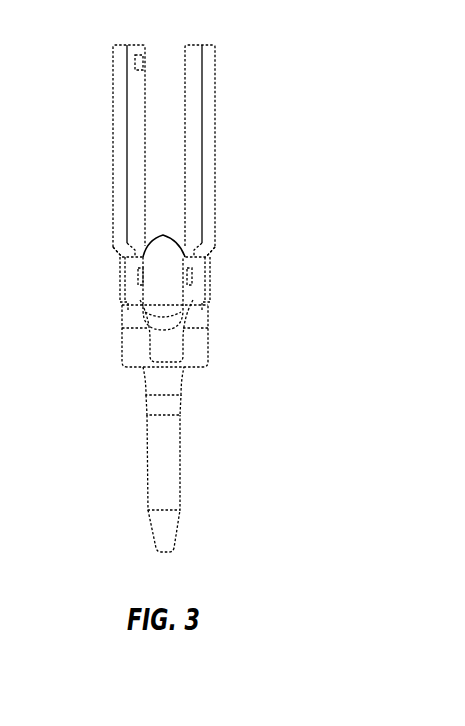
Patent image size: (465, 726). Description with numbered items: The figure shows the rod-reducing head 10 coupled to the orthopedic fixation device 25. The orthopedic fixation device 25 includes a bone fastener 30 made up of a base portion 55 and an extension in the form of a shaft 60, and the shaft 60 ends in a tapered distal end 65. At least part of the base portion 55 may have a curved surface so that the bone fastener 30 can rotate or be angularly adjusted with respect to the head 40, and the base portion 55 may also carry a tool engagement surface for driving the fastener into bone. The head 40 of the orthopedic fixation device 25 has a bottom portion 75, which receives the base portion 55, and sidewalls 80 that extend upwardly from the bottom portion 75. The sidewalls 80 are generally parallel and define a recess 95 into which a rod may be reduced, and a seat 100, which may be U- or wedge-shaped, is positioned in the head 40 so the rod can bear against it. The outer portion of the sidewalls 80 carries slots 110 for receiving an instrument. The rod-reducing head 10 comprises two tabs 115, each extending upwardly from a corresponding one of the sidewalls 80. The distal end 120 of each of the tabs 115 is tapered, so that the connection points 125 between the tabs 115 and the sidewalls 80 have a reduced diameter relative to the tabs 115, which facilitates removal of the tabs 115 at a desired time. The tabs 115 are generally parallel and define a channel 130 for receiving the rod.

The rod-reducing head 10 is at (242, 152).
The orthopedic fixation device 25 is at (262, 396).
The bone fastener 30 is at (142, 398).
The head 40 is at (118, 318).
The base portion 55 is at (195, 368).
The shaft 60 is at (147, 475).
The tapered distal end 65 is at (178, 530).
The bottom portion 75 is at (208, 337).
The sidewalls 80 is at (127, 272).
The recess 95 is at (167, 278).
The seat 100 is at (155, 312).
The slots 110 is at (123, 305).
The tabs 115 is at (112, 127).
The distal end 120 is at (115, 253).
The connection points 125 is at (164, 230).
The channel 130 is at (166, 112).